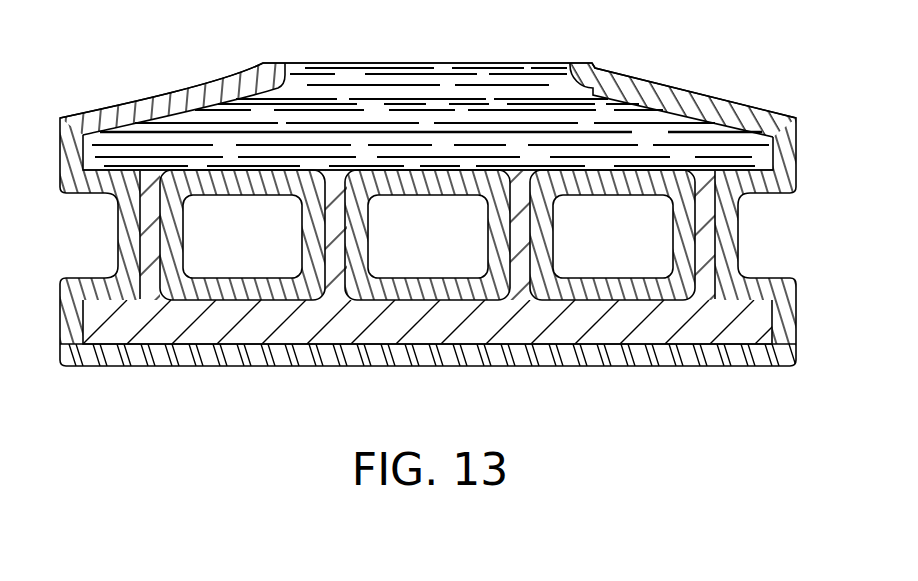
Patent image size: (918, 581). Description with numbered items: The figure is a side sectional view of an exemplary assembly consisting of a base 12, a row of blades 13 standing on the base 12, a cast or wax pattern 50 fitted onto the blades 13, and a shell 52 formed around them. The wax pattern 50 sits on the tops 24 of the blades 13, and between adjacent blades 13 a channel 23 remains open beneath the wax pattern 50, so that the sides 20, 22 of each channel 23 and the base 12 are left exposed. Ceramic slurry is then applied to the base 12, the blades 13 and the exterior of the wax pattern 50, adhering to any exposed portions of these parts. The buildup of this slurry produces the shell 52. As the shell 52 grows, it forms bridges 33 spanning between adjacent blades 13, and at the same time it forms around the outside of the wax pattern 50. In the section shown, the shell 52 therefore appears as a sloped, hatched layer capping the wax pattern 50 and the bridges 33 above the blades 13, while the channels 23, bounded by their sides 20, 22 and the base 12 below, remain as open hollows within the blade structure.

The base 12 is at (193, 333).
The blades 13 is at (705, 242).
The side 20 is at (531, 267).
The side 22 is at (693, 262).
The channel 23 is at (612, 246).
The tops of the blades 24 is at (703, 168).
The bridge 33 is at (407, 170).
The wax pattern 50 is at (467, 88).
The shell 52 is at (163, 90).